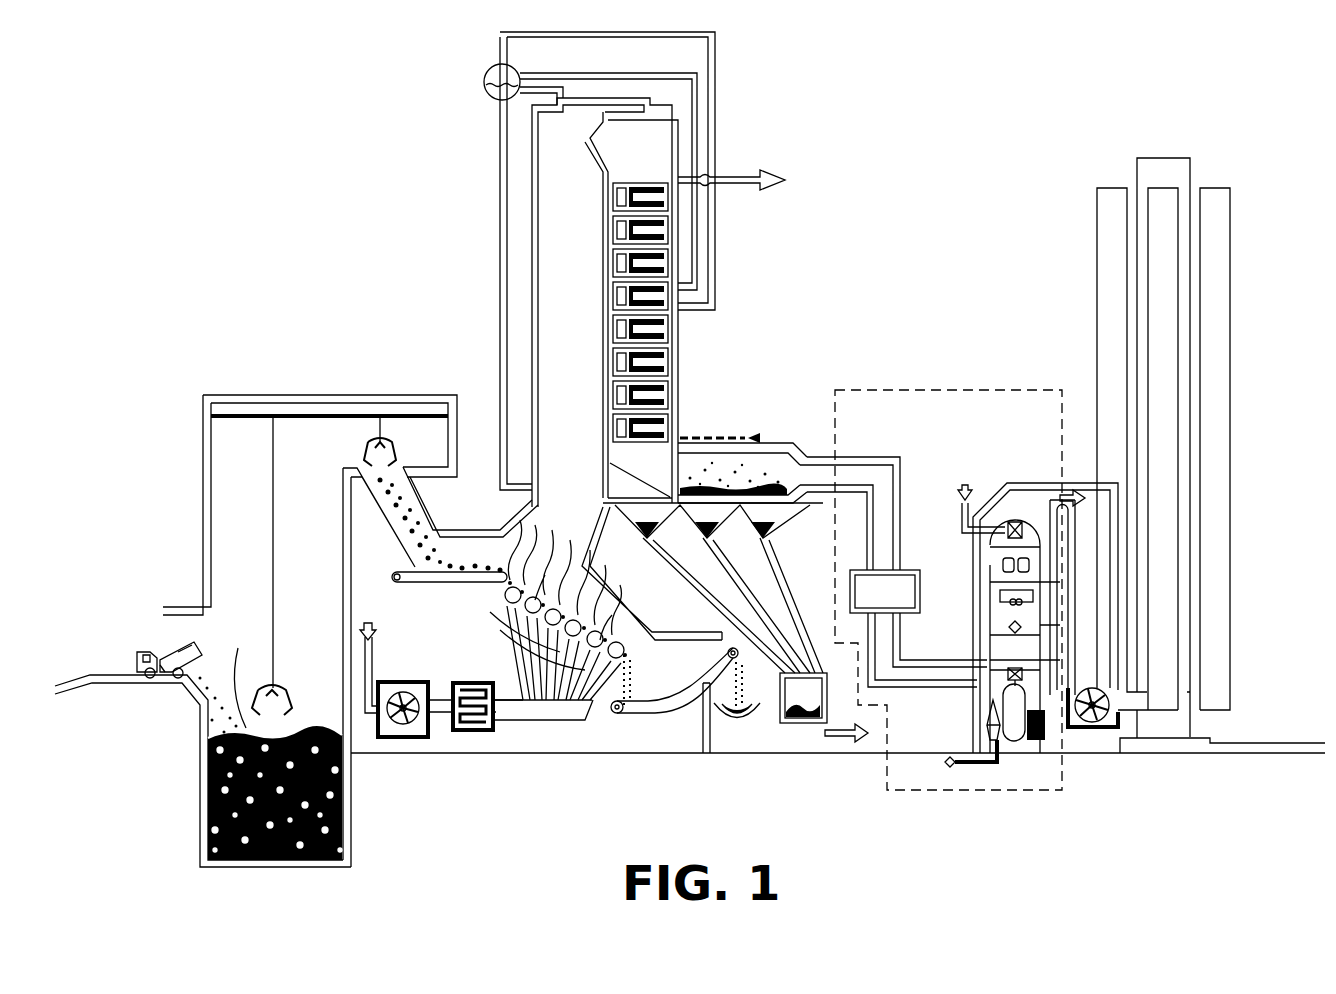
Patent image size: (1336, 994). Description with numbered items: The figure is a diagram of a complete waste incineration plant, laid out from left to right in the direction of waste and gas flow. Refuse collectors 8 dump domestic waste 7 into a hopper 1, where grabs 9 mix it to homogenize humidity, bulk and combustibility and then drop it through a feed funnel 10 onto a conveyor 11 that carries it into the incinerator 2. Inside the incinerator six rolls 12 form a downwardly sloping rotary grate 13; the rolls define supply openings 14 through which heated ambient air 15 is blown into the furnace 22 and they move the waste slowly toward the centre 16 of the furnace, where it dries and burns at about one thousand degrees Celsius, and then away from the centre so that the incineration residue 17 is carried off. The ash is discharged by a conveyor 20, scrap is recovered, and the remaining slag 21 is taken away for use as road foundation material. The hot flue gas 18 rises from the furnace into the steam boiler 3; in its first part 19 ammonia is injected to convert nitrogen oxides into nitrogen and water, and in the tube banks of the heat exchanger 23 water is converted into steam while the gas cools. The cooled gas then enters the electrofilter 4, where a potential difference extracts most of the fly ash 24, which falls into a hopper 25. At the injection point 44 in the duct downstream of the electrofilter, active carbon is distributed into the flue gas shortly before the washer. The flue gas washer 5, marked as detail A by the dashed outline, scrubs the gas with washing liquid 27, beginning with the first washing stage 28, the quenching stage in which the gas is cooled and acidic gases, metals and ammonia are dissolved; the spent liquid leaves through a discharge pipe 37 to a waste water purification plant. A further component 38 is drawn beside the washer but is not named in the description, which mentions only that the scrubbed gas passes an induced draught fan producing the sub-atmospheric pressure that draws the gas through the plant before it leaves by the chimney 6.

The hopper 1 is at (178, 789).
The incinerator 2 is at (606, 557).
The steam boiler 3 is at (478, 207).
The electrofilter 4 is at (793, 430).
The flue gas washer 5 is at (985, 470).
The chimney 6 is at (1112, 167).
The domestic waste 7 is at (271, 740).
The refuse collectors 8 is at (146, 655).
The grabs 9 is at (368, 446).
The feed funnel 10 is at (398, 535).
The conveyor 11 is at (435, 584).
The rolls 12 is at (506, 594).
The rotary grate 13 is at (517, 649).
The supply openings 14 is at (507, 620).
The heated ambient air 15 is at (376, 623).
The centre of the furnace 16 is at (588, 614).
The incineration residue 17 is at (622, 712).
The flue gas 18 is at (570, 316).
The first part of steam boiler 19 is at (570, 486).
The conveyor 20 is at (680, 690).
The slag 21 is at (737, 714).
The furnace 22 is at (540, 540).
The heat exchanger 23 is at (694, 283).
The fly ash 24 is at (773, 525).
The hopper 25 is at (805, 724).
The washing liquid 27 is at (960, 491).
The first washing stage 28 is at (908, 587).
The discharge pipe 37 is at (944, 763).
The induced draft fan 38 is at (1097, 728).
The injection point 44 is at (888, 533).
The detail A is at (998, 389).